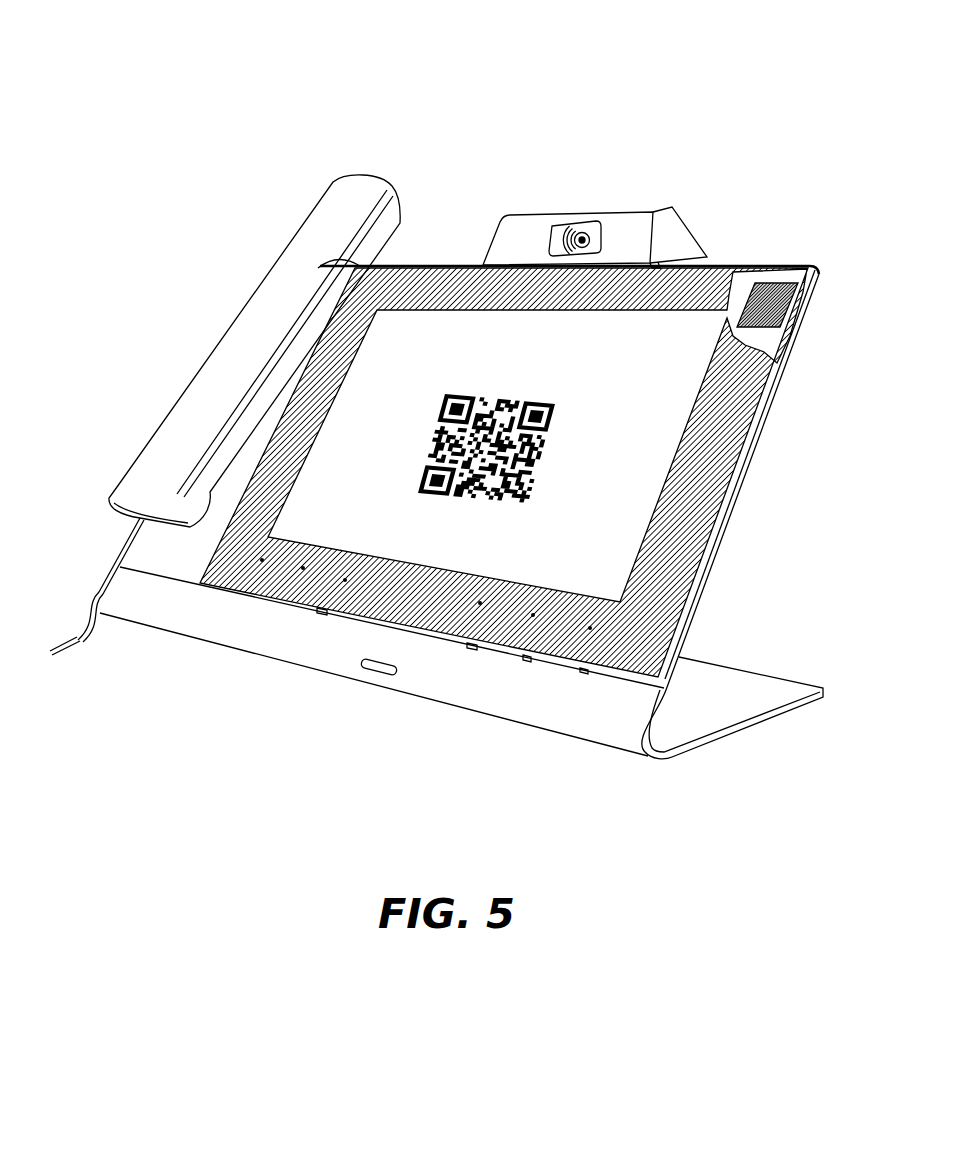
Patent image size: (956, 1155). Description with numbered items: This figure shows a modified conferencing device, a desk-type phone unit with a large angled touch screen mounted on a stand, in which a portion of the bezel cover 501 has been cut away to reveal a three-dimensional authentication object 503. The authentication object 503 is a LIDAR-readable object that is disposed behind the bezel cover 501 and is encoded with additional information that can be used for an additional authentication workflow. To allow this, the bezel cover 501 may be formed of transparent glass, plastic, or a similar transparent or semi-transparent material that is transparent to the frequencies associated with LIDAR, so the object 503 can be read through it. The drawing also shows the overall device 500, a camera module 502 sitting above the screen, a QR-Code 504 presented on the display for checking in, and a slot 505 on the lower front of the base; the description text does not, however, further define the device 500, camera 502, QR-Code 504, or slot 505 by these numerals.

The desk phone device 500 is at (450, 396).
The bezel cover 501 is at (417, 284).
The camera module 502 is at (549, 212).
The three-dimensional authentication object 503 is at (779, 283).
The QR code 504 is at (543, 462).
The slot / button 505 is at (378, 673).